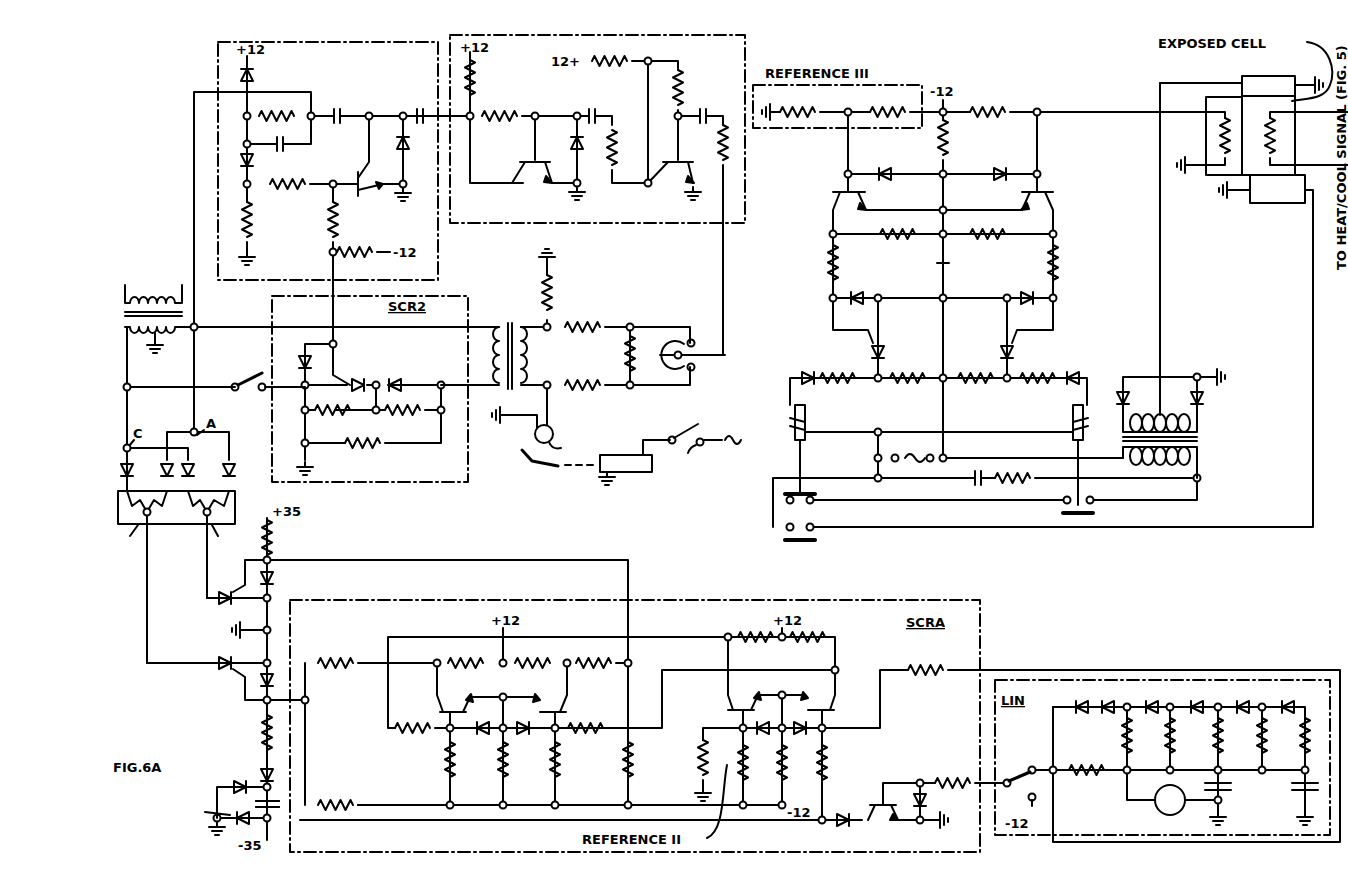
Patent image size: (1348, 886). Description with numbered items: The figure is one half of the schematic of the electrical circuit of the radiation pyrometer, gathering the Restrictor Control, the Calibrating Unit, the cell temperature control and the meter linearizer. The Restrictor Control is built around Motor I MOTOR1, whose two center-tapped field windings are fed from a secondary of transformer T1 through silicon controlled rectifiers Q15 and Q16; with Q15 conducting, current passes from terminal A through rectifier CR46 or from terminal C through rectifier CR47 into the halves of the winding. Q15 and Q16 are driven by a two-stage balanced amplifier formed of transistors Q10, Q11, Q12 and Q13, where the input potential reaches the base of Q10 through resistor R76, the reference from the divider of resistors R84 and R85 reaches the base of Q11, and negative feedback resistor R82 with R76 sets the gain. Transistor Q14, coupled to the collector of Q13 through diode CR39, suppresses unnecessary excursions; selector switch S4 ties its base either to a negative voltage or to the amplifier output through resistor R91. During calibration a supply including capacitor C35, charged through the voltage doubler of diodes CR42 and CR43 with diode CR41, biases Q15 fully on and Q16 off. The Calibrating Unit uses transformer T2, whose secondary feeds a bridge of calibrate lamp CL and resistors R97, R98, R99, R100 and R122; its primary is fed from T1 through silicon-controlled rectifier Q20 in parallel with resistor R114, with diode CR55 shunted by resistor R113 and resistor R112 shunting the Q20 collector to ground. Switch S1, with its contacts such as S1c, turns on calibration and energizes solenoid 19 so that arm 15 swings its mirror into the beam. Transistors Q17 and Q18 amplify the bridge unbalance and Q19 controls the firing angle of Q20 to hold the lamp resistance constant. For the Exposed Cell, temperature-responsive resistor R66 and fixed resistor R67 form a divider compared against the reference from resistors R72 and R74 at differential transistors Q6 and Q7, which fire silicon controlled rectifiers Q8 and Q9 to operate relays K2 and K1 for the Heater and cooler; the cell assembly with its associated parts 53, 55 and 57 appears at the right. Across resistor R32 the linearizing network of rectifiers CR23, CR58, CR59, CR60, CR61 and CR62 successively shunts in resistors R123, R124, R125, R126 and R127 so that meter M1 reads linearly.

The arm 15 is at (540, 469).
The solenoid 19 is at (634, 472).
The cooling element resistor housing 53 is at (1206, 177).
The heater 55 is at (1255, 204).
The exposed cell 57 is at (1242, 80).
The transistor Q6 is at (874, 209).
The transistor Q7 is at (1011, 209).
The silicon controlled rectifier Q8 is at (861, 355).
The silicon controlled rectifier Q9 is at (1021, 355).
The relay K1 is at (1060, 422).
The relay K2 is at (812, 422).
The temperature-responsive resistor R66 is at (1212, 140).
The fixed resistor R67 is at (987, 102).
The resistor R72 is at (887, 104).
The resistor R74 is at (797, 104).
The transformer T1 is at (157, 306).
The transformer T2 is at (490, 347).
The resistor R97 is at (588, 314).
The resistor R98 is at (552, 293).
The resistor R99 is at (676, 344).
The resistor R100 is at (593, 396).
The resistor R122 is at (608, 353).
The calibrating lamp CL is at (559, 436).
The switch contact S1c is at (692, 445).
The silicon-controlled rectifier Q20 is at (359, 372).
The diode CR55 is at (400, 379).
The resistor R112 is at (330, 418).
The resistor R113 is at (403, 418).
The resistor R114 is at (373, 451).
The switch S1 is at (249, 377).
The silicon controlled rectifier Q15 is at (224, 585).
The silicon controlled rectifier Q16 is at (226, 660).
The diode CR41 is at (209, 816).
The diode CR42 is at (229, 784).
The diode CR43 is at (262, 773).
The capacitor C35 is at (280, 806).
The rectifier CR46 is at (230, 468).
The rectifier CR47 is at (196, 463).
The motor MOTOR1 is at (237, 503).
The transistor Q13 is at (417, 698).
The transistor Q12 is at (586, 698).
The transistor Q11 is at (712, 696).
The transistor Q10 is at (852, 696).
The resistor R76 is at (925, 672).
The negative feedback resistor R82 is at (828, 777).
The resistor R84 is at (748, 778).
The resistor R85 is at (700, 763).
The resistor R91 is at (962, 777).
The transistor Q14 is at (882, 833).
The diode CR39 is at (846, 825).
The selector switch S4 is at (1015, 778).
The resistor R32 is at (1108, 782).
The rectifier CR23 is at (1069, 696).
The rectifier CR58 is at (1119, 700).
The rectifier CR59 is at (1165, 695).
The rectifier CR60 is at (1210, 698).
The rectifier CR61 is at (1256, 696).
The rectifier CR62 is at (1301, 696).
The resistor R123 is at (1126, 740).
The resistor R124 is at (1168, 746).
The resistor R125 is at (1216, 746).
The resistor R126 is at (1260, 746).
The resistor R127 is at (1303, 746).
The meter M1 is at (1170, 800).
The transistor Q17 is at (674, 182).
The transistor Q18 is at (548, 170).
The transistor Q19 is at (383, 159).